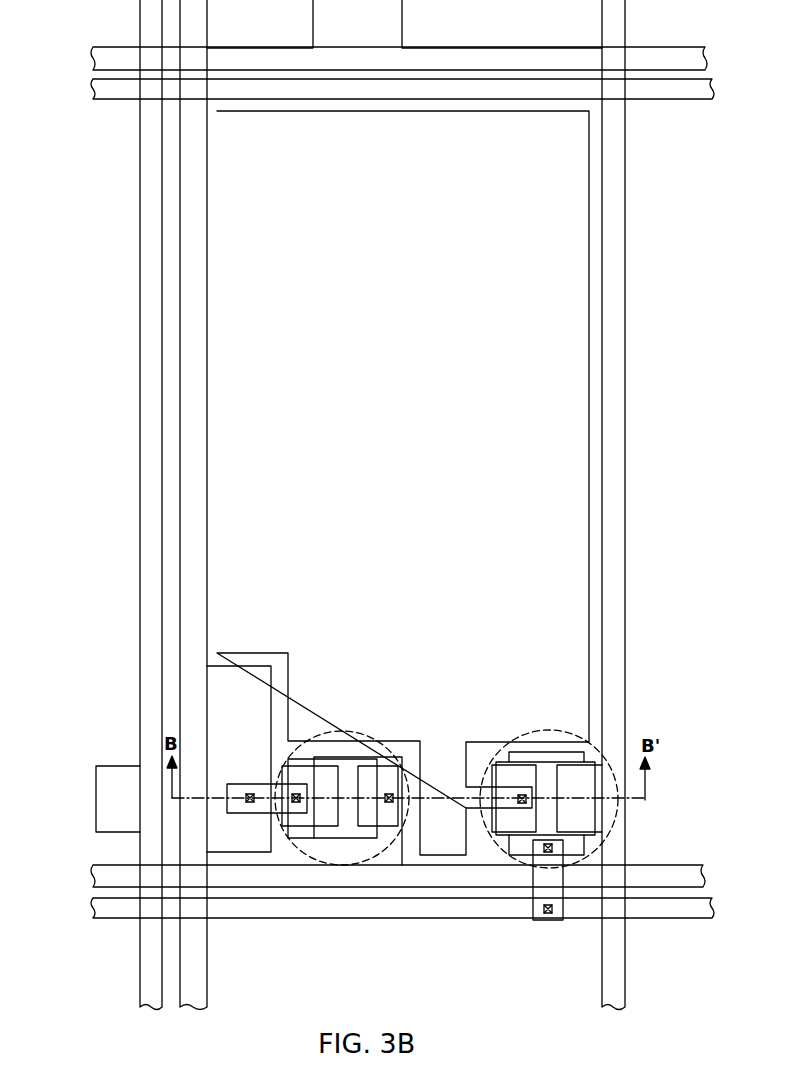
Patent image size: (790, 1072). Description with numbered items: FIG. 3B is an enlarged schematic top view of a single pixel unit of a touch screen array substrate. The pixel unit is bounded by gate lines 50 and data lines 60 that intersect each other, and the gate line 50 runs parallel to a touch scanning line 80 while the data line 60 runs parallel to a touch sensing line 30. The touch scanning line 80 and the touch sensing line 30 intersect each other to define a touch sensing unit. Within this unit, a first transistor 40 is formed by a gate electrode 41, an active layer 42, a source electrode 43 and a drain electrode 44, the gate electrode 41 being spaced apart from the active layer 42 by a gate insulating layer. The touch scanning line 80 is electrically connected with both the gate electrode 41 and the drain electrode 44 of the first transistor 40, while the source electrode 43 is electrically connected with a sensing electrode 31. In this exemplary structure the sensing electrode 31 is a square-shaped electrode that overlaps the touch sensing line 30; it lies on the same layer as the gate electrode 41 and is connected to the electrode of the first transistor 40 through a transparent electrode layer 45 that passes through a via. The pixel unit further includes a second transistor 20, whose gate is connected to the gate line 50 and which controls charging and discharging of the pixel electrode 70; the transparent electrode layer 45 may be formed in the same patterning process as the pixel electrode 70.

The second transistor 20 is at (610, 743).
The touch sensing line 30 is at (197, 943).
The sensing electrode 31 is at (326, 848).
The first transistor 40 is at (410, 822).
The gate electrode 41 is at (248, 830).
The active layer 42 is at (350, 773).
The source electrode 43 is at (308, 775).
The drain electrode 44 is at (380, 782).
The transparent electrode layer 45 is at (262, 787).
The gate line 50 is at (115, 89).
The data line 60 is at (152, 953).
The pixel electrode 70 is at (568, 622).
The touch scanning line 80 is at (125, 53).